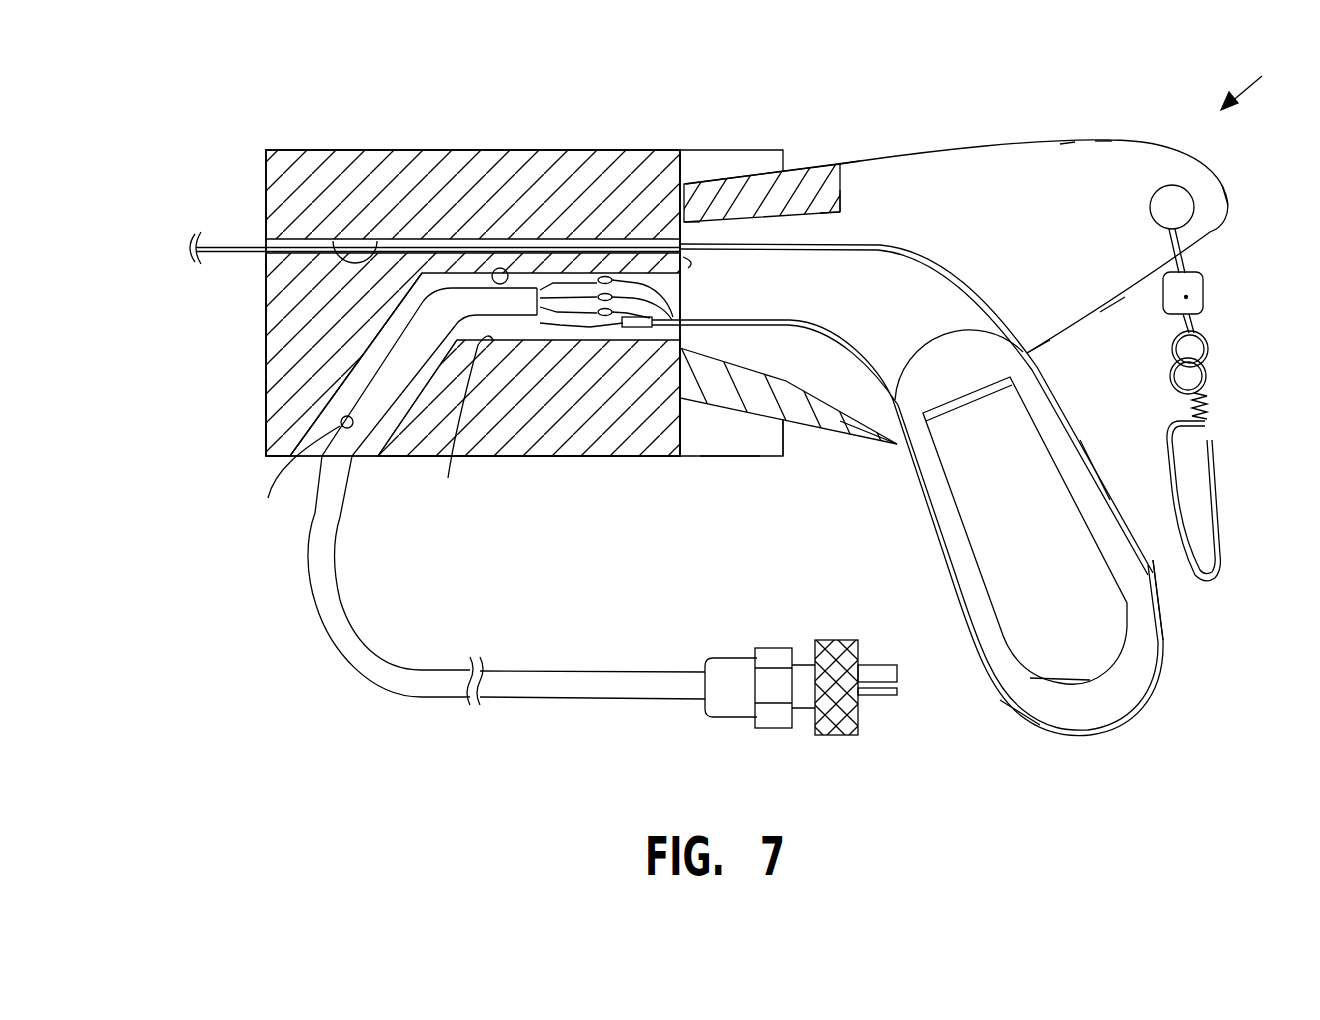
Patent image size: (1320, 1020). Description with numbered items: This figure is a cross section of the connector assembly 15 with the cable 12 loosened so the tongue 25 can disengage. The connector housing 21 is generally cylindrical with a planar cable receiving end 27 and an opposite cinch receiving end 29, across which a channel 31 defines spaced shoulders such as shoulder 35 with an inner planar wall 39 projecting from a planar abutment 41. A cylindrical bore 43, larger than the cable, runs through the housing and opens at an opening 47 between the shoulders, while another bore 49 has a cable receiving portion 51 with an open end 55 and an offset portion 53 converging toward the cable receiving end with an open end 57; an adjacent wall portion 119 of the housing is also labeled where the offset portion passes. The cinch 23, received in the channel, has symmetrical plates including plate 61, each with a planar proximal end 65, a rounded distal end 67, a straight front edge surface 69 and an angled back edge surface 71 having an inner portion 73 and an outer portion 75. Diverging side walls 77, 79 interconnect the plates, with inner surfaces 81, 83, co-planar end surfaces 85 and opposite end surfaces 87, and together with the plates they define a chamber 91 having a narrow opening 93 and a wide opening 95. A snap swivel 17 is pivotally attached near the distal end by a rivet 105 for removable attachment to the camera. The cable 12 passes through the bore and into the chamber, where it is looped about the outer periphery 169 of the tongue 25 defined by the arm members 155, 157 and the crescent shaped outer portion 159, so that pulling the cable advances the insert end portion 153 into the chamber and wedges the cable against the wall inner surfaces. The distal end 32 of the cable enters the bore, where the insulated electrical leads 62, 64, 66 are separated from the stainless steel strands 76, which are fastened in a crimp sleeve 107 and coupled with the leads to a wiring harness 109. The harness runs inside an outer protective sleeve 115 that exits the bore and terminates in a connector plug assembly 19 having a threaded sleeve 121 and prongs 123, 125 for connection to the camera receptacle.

The cable 12 is at (218, 245).
The connector assembly 15 is at (1251, 76).
The snap swivel 17 is at (1212, 372).
The electrical connector plug assembly 19 is at (722, 720).
The connector housing 21 is at (430, 160).
The cinch 23 is at (1005, 150).
The tongue 25 is at (1118, 705).
The cable receiving end 27 is at (265, 405).
The cinch receiving end 29 is at (735, 457).
The channel 31 is at (692, 457).
The distal end of the cable 32 is at (1020, 708).
The shoulder 35 is at (753, 160).
The inner planar wall 39 is at (778, 442).
The planar abutment 41 is at (695, 195).
The cylindrical bore 43 is at (378, 240).
The opening 47 is at (700, 247).
The bore 49 is at (463, 420).
The cable receiving portion 51 is at (498, 268).
The offset portion 53 is at (303, 470).
The open end 55 is at (700, 336).
The open end 57 is at (380, 457).
The plate 61 is at (1103, 170).
The insulated electrical lead 62 is at (622, 279).
The insulated electrical lead 64 is at (640, 297).
The proximal end 65 is at (690, 262).
The insulated electrical lead 66 is at (655, 311).
The distal end 67 is at (1230, 200).
The front edge surface 69 is at (1068, 142).
The back edge surface 71 is at (1103, 312).
The inner portion 73 is at (842, 430).
The outer portion 75 is at (1045, 348).
The stainless steel strands 76 is at (585, 400).
The side wall 77 is at (805, 180).
The side wall 79 is at (852, 440).
The inner surface 81 is at (845, 212).
The inner surface 83 is at (778, 372).
The end surface 85 is at (660, 232).
The end surface 87 is at (855, 168).
The chamber 91 is at (759, 299).
The narrow opening 93 is at (702, 225).
The wide opening 95 is at (850, 203).
The rivet 105 is at (1182, 208).
The crimp sleeve 107 is at (600, 345).
The wiring harness 109 is at (388, 668).
The outer protective sleeve 115 is at (600, 670).
The channel wall 119 is at (371, 457).
The threaded sleeve 121 is at (842, 738).
The prong 123 is at (882, 662).
The prong 125 is at (888, 700).
The insert end portion 153 is at (970, 378).
The arm member 155 is at (1108, 500).
The arm member 157 is at (965, 553).
The outer portion 159 is at (1062, 690).
The outer periphery 169 is at (1163, 628).